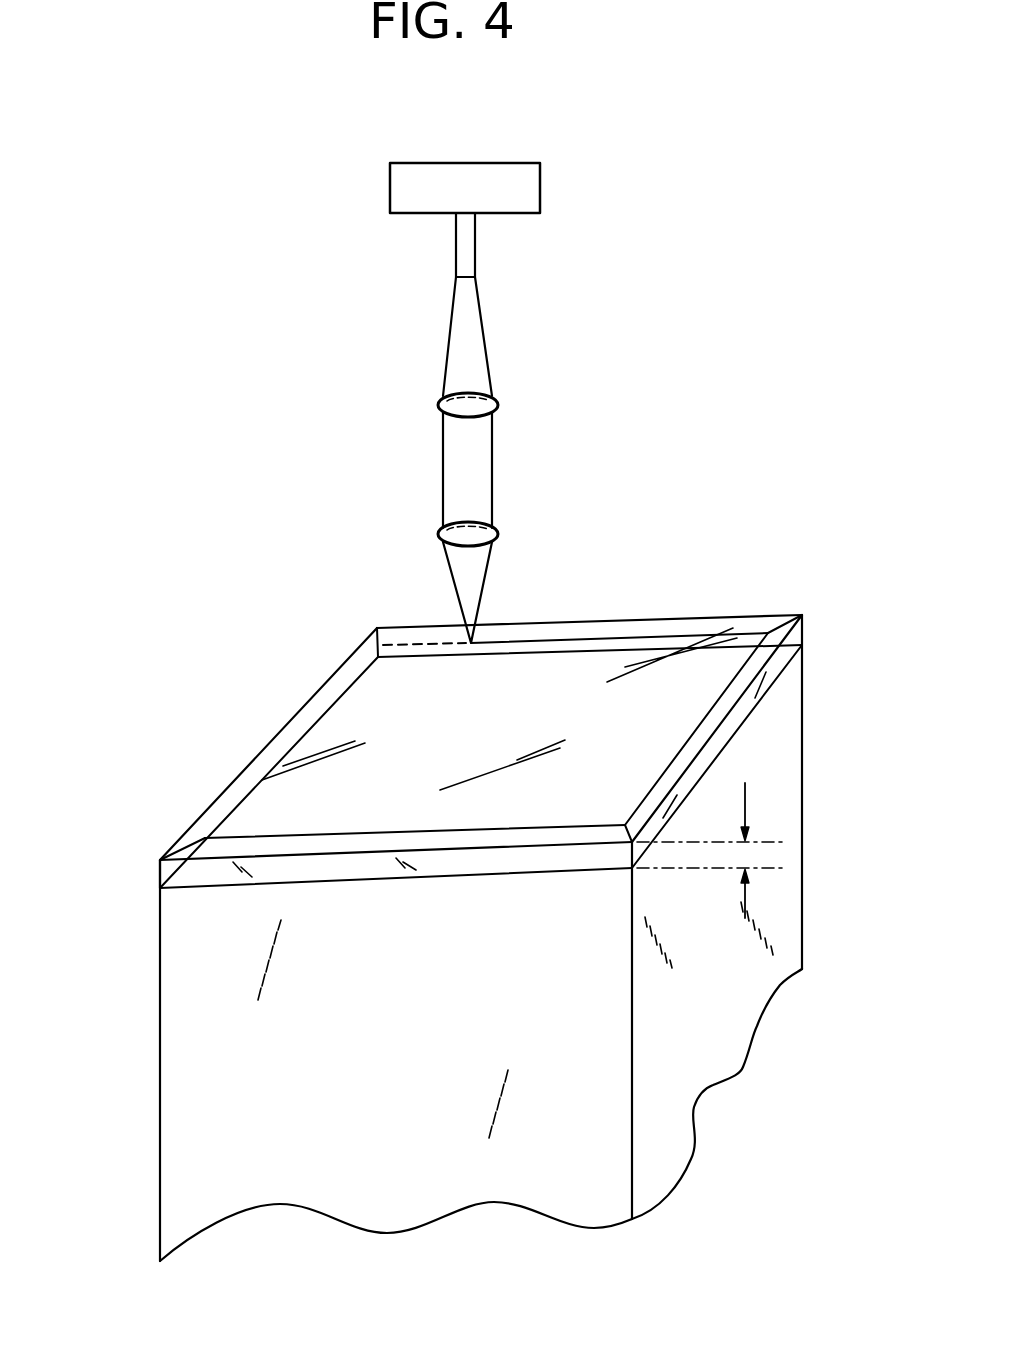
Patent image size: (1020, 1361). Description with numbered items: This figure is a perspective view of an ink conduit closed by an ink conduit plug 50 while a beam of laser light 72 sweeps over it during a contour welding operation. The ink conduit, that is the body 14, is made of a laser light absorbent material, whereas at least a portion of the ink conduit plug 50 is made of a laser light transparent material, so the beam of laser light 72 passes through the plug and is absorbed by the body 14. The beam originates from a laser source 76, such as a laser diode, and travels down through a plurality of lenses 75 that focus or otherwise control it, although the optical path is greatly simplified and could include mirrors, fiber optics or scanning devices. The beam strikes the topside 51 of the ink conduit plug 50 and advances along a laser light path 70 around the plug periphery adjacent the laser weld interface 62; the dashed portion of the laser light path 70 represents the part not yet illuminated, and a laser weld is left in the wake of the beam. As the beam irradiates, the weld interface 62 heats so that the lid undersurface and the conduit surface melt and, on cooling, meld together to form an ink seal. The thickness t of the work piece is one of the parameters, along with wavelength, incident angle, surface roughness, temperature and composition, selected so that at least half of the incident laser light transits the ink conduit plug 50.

The body 14 is at (160, 1047).
The ink conduit plug 50 is at (250, 753).
The topside 51 is at (512, 743).
The laser weld interface 62 is at (160, 887).
The laser light path 70 is at (655, 634).
The beam of laser light 72 is at (483, 590).
The lenses 75 is at (497, 397).
The laser source 76 is at (540, 183).
The thickness t is at (760, 853).